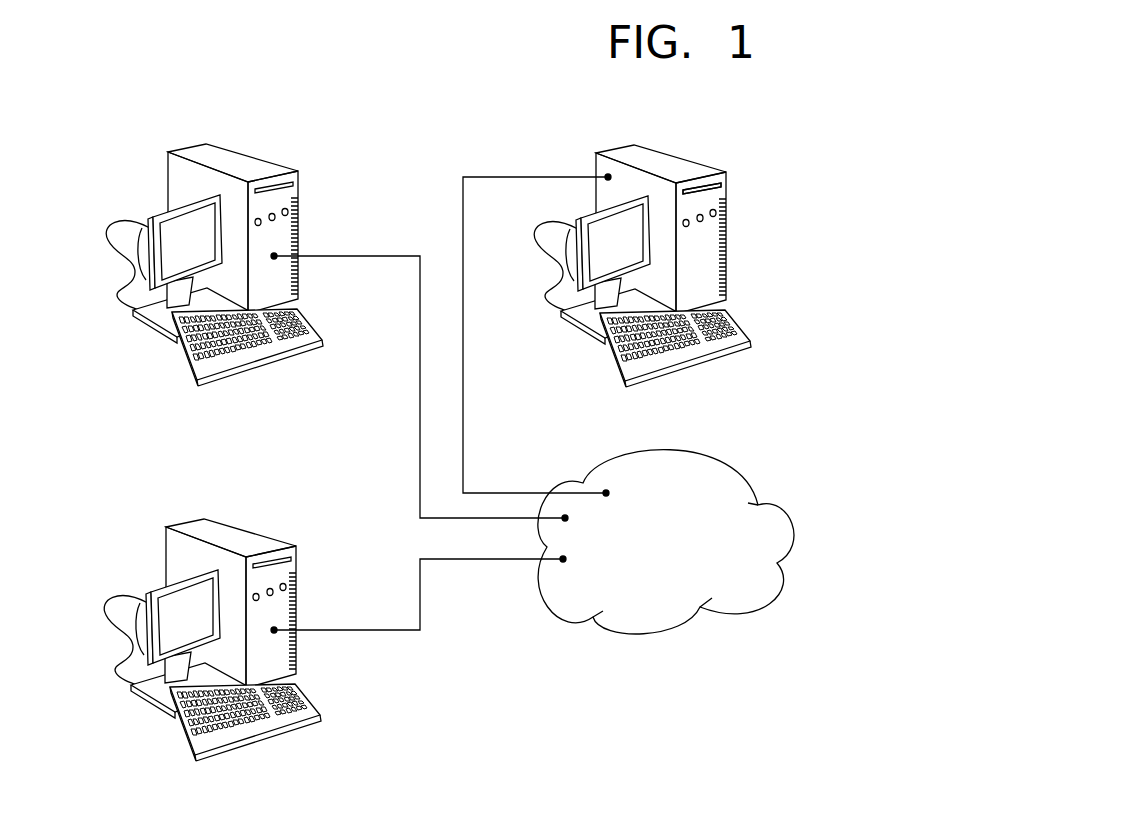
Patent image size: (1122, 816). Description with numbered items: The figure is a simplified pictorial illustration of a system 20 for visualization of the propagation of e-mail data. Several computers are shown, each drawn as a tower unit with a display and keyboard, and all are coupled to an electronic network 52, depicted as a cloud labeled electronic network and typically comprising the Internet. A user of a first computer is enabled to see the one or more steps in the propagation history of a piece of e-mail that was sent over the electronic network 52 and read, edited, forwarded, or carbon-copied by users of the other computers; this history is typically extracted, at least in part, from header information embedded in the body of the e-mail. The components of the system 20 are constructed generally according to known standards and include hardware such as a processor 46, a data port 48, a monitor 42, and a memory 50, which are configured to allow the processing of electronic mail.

The system 20 is at (1005, 200).
The monitor 42 is at (188, 223).
The processor 46 is at (708, 258).
The data port 48 is at (606, 177).
The memory 50 is at (732, 192).
The electronic network 52 is at (733, 473).